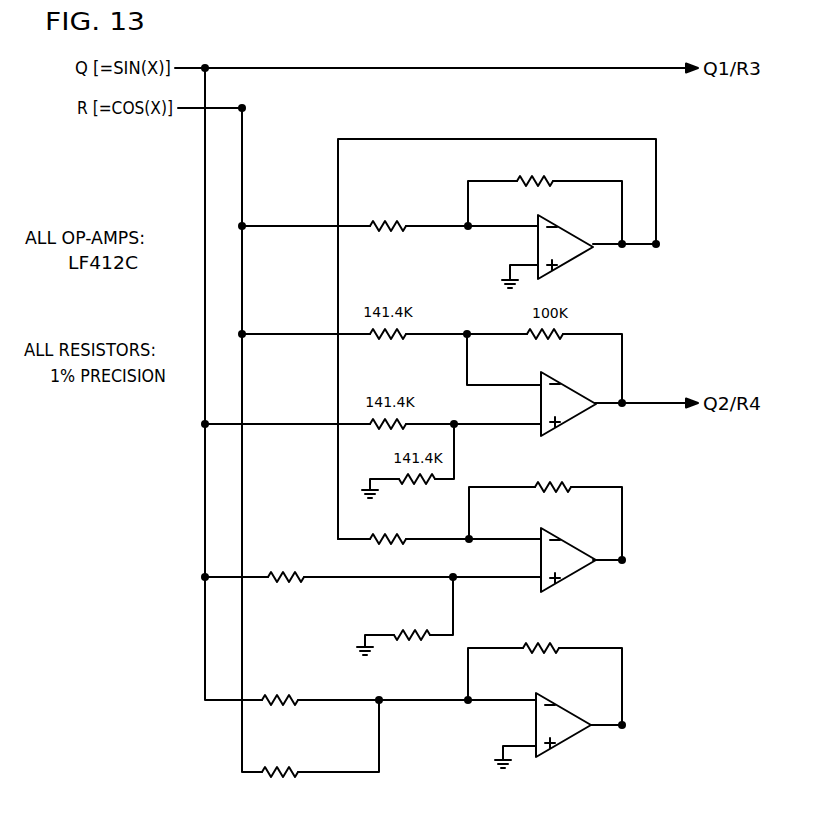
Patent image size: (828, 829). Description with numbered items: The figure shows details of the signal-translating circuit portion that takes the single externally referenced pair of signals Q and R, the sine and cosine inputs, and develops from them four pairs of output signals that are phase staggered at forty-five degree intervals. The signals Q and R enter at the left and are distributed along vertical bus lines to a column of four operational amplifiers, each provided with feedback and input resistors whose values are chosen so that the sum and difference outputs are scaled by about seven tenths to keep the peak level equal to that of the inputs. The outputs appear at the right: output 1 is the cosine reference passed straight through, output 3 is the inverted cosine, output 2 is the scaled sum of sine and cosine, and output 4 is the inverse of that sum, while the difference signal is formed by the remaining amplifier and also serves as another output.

The R1 output (cosine reference line) 1 is at (242, 108).
The R2 output op-amp stage 2 is at (622, 560).
The Q3 output op-amp stage 3 is at (656, 244).
The Q4 output op-amp stage 4 is at (622, 725).